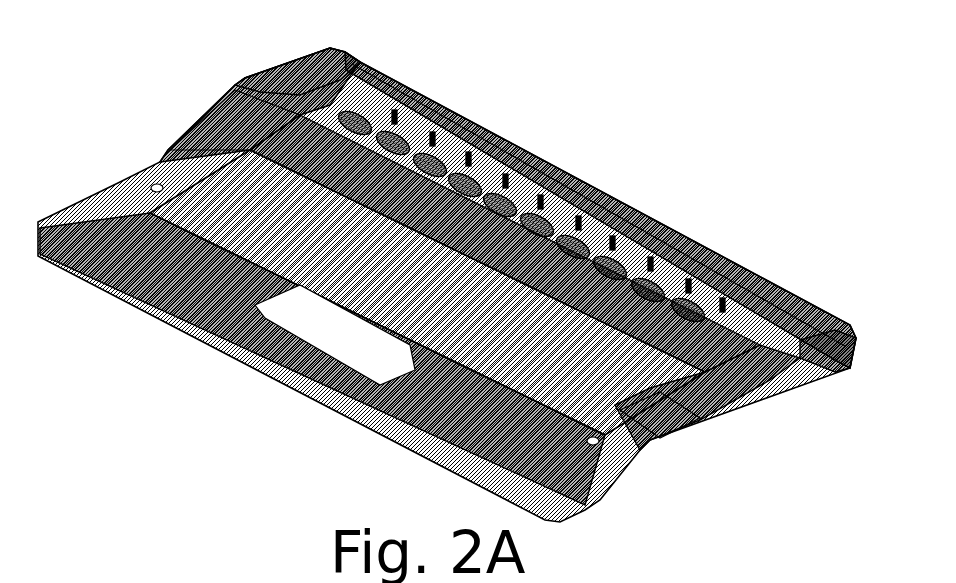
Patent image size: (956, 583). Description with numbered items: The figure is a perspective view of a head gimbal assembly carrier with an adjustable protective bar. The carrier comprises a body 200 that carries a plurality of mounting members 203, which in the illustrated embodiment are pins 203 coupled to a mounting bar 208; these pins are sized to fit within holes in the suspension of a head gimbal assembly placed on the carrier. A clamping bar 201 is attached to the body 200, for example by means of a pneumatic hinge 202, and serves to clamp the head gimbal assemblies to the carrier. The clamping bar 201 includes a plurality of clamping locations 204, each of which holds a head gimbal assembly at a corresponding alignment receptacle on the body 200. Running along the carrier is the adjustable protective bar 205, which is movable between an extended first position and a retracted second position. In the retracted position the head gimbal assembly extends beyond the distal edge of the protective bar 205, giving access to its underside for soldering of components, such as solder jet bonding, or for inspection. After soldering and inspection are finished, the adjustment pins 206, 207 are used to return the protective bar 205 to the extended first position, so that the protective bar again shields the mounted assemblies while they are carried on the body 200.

The body 200 is at (341, 262).
The clamping bar 201 is at (304, 84).
The pneumatic hinge 202 is at (678, 410).
The mounting members 203 is at (390, 112).
The clamping locations 204 is at (545, 213).
The adjustable protective bar 205 is at (690, 250).
The adjustment pin 206 is at (812, 356).
The adjustment pin 207 is at (335, 54).
The mounting bar 208 is at (445, 146).